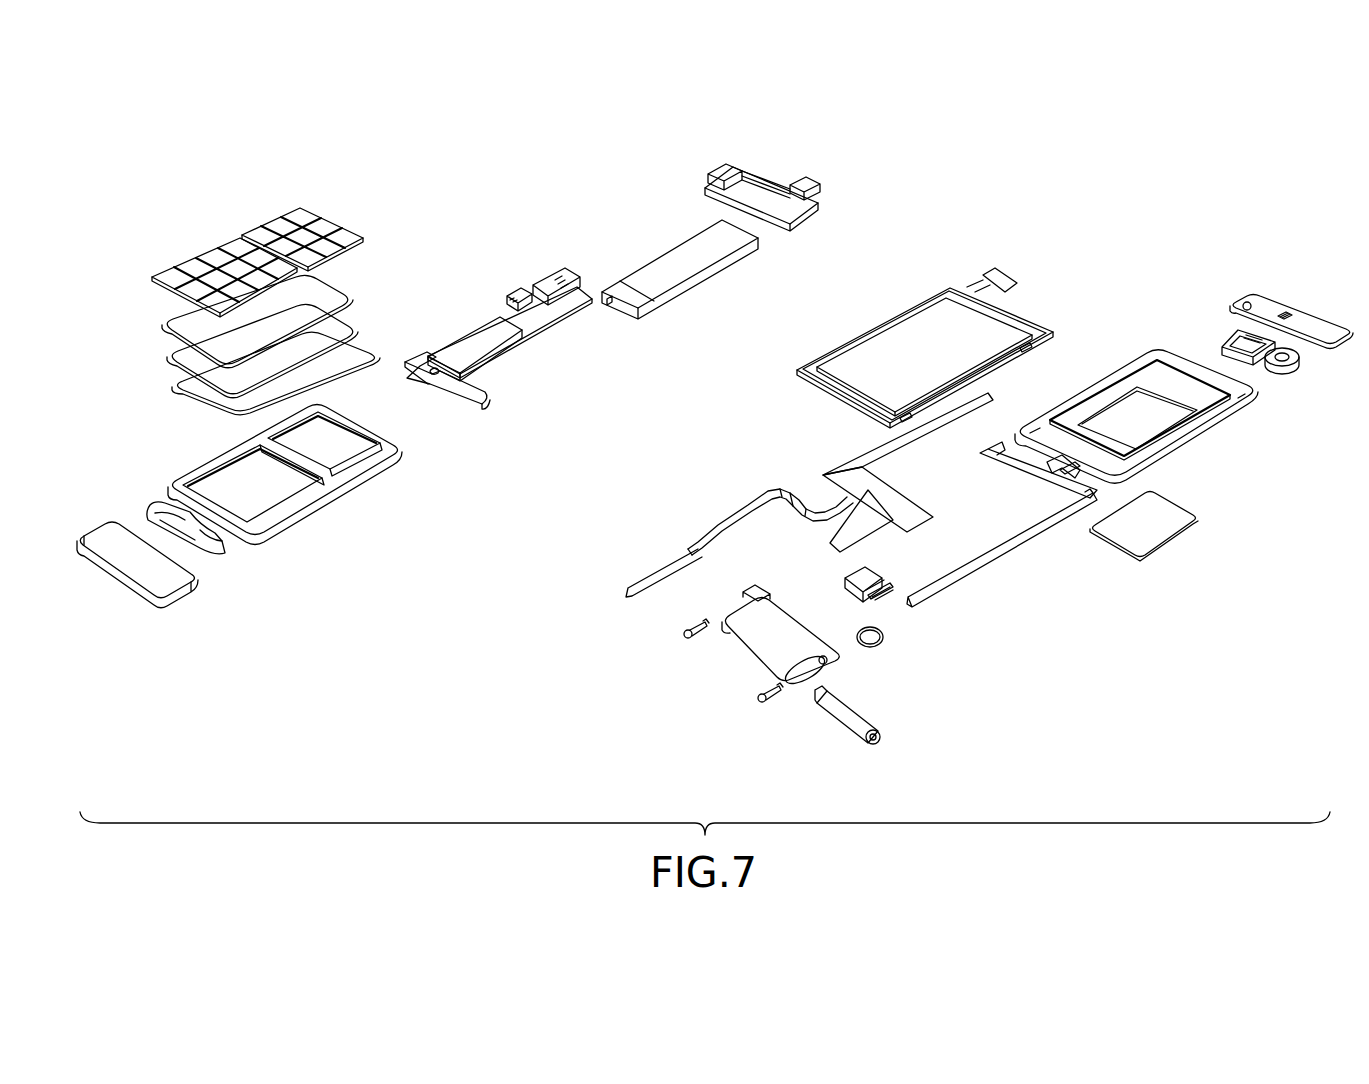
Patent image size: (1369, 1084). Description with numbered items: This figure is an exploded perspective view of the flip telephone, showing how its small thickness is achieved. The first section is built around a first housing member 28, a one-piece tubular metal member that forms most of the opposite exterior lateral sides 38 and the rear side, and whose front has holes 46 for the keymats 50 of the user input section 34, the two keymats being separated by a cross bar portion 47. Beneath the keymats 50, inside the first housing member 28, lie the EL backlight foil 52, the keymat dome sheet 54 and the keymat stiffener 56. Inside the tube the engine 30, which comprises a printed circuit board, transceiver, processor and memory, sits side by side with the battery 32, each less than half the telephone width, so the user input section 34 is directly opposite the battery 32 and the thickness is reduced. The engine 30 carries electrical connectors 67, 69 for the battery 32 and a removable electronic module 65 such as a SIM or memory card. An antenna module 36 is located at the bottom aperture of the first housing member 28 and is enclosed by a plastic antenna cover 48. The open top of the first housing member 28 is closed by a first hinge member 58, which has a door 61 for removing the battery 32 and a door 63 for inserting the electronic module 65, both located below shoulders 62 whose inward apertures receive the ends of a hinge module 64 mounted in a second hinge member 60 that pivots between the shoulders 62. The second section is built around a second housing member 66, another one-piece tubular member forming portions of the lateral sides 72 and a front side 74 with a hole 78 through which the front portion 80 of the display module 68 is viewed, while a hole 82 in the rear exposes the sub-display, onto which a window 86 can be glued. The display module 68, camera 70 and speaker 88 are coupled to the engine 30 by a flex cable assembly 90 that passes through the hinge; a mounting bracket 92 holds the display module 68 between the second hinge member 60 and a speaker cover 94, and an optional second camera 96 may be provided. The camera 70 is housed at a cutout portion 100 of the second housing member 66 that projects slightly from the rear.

The first housing member 28 is at (311, 490).
The engine 30 is at (478, 335).
The battery 32 is at (668, 243).
The user input section 34 is at (205, 215).
The antenna module 36 is at (215, 563).
The opposite exterior lateral sides 38 is at (375, 472).
The holes 46 is at (395, 430).
The cross bar portion 47 is at (327, 490).
The antenna cover 48 is at (167, 603).
The keymats 50 is at (178, 272).
The EL backlight foil 52 is at (181, 325).
The keymat dome sheet 54 is at (181, 358).
The keymat stiffener 56 is at (200, 392).
The first hinge member 58 is at (781, 172).
The second hinge member 60 is at (773, 618).
The door 61 is at (780, 192).
The shoulders 62 is at (722, 163).
The door 63 is at (752, 183).
The hinge module 64 is at (837, 725).
The electronic module 65 is at (568, 293).
The second housing member 66 is at (1152, 438).
The electrical connector 67 is at (470, 397).
The display module 68 is at (911, 348).
The electrical connector 69 is at (540, 283).
The camera 70 is at (880, 608).
The opposite exterior lateral sides 72 is at (1082, 390).
The front side 74 is at (1168, 357).
The hole 78 is at (1187, 373).
The front portion 80 is at (883, 337).
The hole 82 is at (1160, 427).
The window 86 is at (1178, 537).
The speaker 88 is at (1233, 327).
The flex cable assembly 90 is at (848, 468).
The mounting bracket 92 is at (982, 574).
The speaker cover 94 is at (1290, 303).
The second camera 96 is at (1297, 372).
The cutout portion 100 is at (1062, 470).